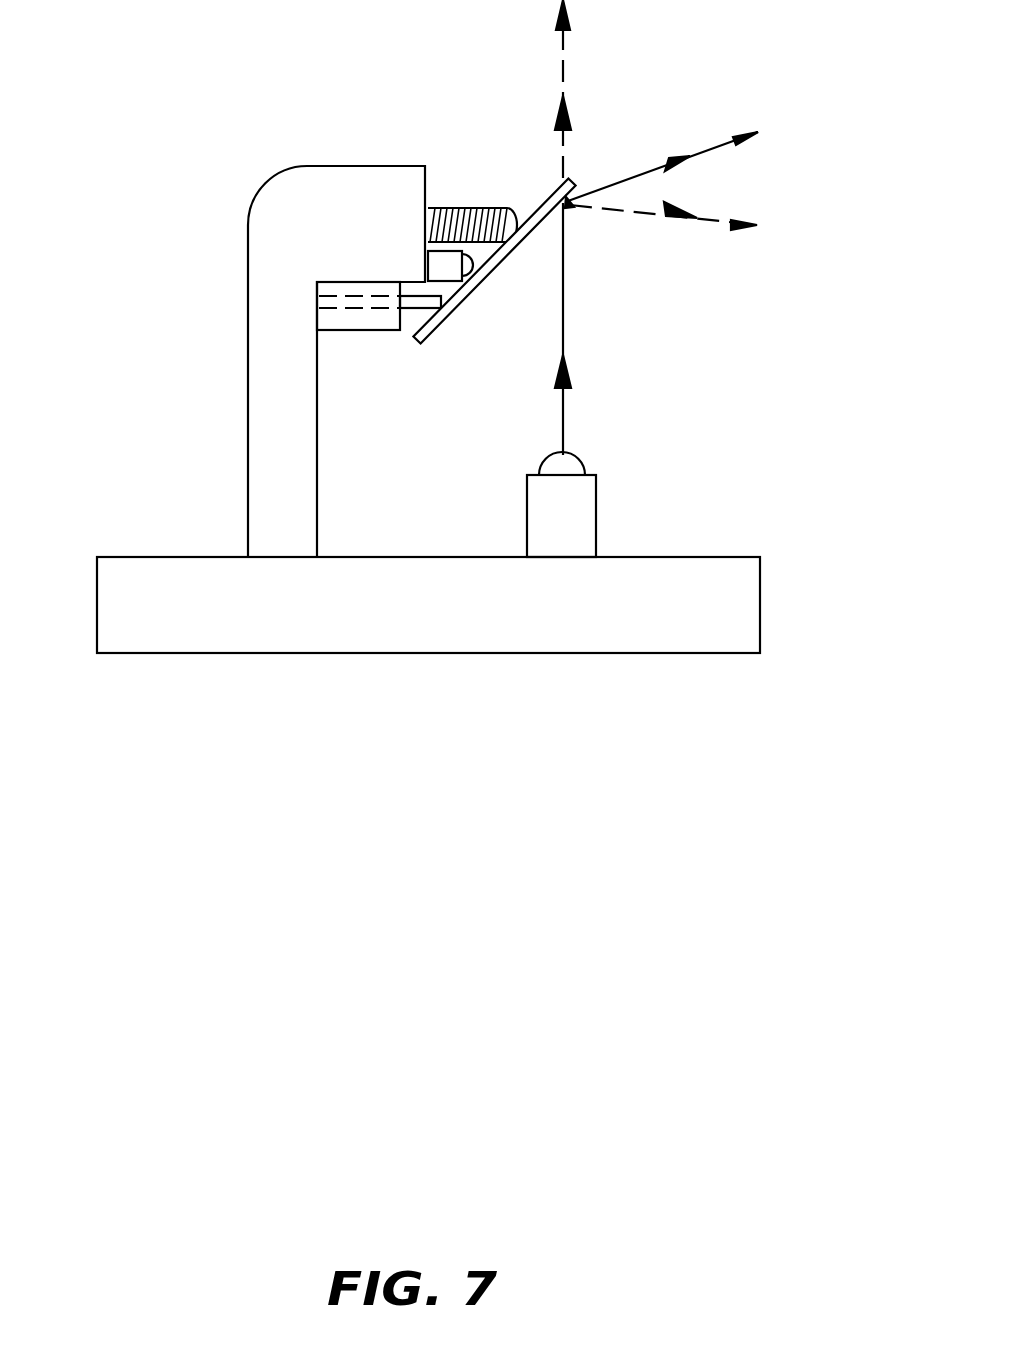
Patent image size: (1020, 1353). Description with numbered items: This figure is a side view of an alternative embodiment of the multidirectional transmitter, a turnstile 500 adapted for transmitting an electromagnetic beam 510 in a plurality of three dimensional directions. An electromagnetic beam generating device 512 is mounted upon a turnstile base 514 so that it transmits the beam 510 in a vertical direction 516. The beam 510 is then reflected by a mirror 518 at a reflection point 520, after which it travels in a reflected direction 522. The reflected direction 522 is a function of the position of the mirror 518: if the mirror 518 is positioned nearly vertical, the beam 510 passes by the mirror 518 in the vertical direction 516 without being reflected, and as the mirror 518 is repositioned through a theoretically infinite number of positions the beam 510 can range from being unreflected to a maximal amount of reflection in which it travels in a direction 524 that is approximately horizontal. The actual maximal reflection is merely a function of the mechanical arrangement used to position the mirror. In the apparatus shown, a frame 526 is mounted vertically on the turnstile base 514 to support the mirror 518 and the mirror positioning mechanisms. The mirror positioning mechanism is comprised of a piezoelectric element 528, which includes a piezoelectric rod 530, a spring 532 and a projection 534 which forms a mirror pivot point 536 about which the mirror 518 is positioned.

The turnstile 500 is at (256, 127).
The electromagnetic beam 510 is at (565, 412).
The electromagnetic beam generating device 512 is at (528, 520).
The turnstile base 514 is at (638, 627).
The vertical direction 516 is at (565, 365).
The mirror 518 is at (458, 298).
The reflection point 520 is at (565, 207).
The reflected direction 522 is at (673, 147).
The direction of maximal reflection 524 is at (673, 207).
The frame 526 is at (278, 465).
The piezoelectric element 528 is at (337, 317).
The piezoelectric rod 530 is at (417, 310).
The spring 532 is at (470, 207).
The projection 534 is at (433, 267).
The mirror pivot point 536 is at (514, 245).